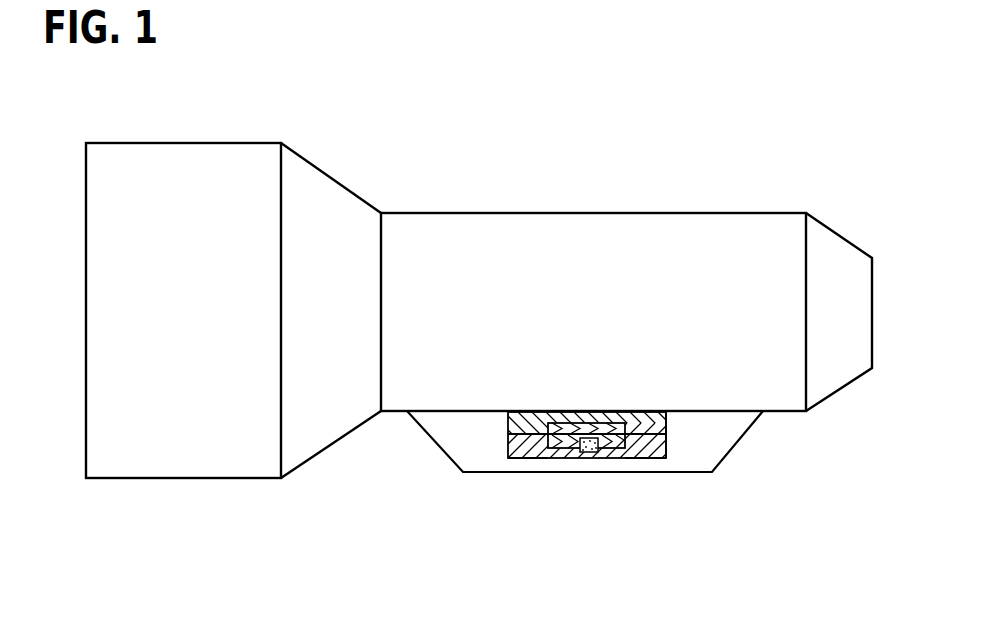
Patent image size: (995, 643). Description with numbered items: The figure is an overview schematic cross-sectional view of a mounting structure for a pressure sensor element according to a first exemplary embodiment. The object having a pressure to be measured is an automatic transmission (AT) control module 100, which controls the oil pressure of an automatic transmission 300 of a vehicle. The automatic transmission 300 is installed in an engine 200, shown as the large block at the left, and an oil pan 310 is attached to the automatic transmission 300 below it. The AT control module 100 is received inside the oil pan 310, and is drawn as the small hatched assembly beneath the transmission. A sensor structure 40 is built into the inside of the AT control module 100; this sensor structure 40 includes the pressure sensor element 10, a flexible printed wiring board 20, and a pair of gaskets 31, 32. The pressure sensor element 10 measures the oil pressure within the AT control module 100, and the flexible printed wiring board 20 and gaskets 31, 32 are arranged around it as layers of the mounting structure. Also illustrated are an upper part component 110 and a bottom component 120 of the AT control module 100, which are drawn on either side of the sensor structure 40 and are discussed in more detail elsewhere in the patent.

The engine 200 is at (210, 163).
The automatic transmission 300 is at (667, 235).
The oil pan 310 is at (746, 437).
The AT control module 100 is at (633, 466).
The upper part component 110 is at (667, 430).
The bottom component 120 is at (663, 450).
The gasket 31 is at (507, 434).
The flexible printed wiring board 20 is at (548, 440).
The gasket 32 is at (553, 449).
The sensor structure 40 is at (607, 456).
The pressure sensor element 10 is at (578, 453).